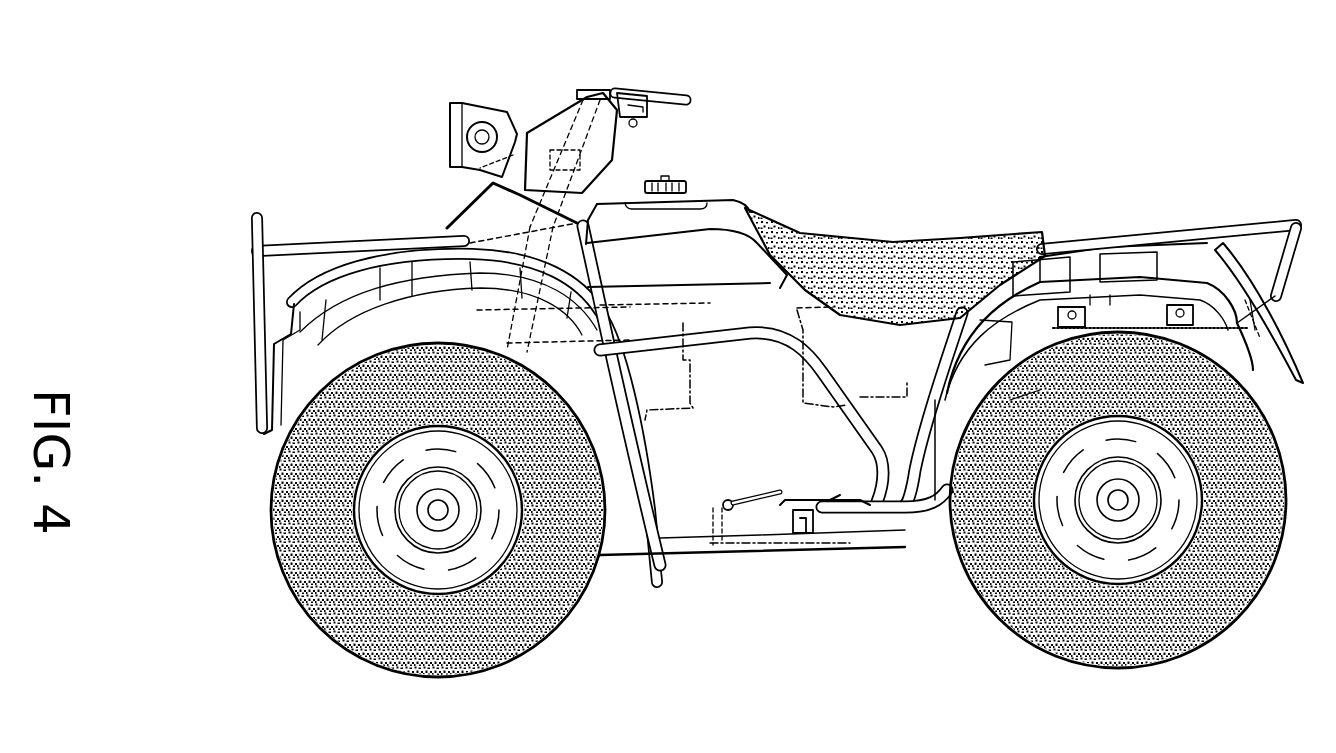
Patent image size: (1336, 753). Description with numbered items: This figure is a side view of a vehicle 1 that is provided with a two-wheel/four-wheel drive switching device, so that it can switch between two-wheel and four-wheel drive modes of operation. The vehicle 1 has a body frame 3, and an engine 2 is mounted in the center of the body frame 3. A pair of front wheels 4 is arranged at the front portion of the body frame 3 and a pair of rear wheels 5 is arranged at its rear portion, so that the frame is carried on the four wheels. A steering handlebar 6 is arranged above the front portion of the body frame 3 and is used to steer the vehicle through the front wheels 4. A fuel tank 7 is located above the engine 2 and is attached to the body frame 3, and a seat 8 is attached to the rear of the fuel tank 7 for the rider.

The vehicle 1 is at (722, 196).
The engine 2 is at (857, 503).
The body frame 3 is at (737, 557).
The front wheels 4 is at (285, 578).
The rear wheels 5 is at (990, 628).
The steering handlebar 6 is at (632, 88).
The fuel tank 7 is at (707, 183).
The seat 8 is at (907, 238).